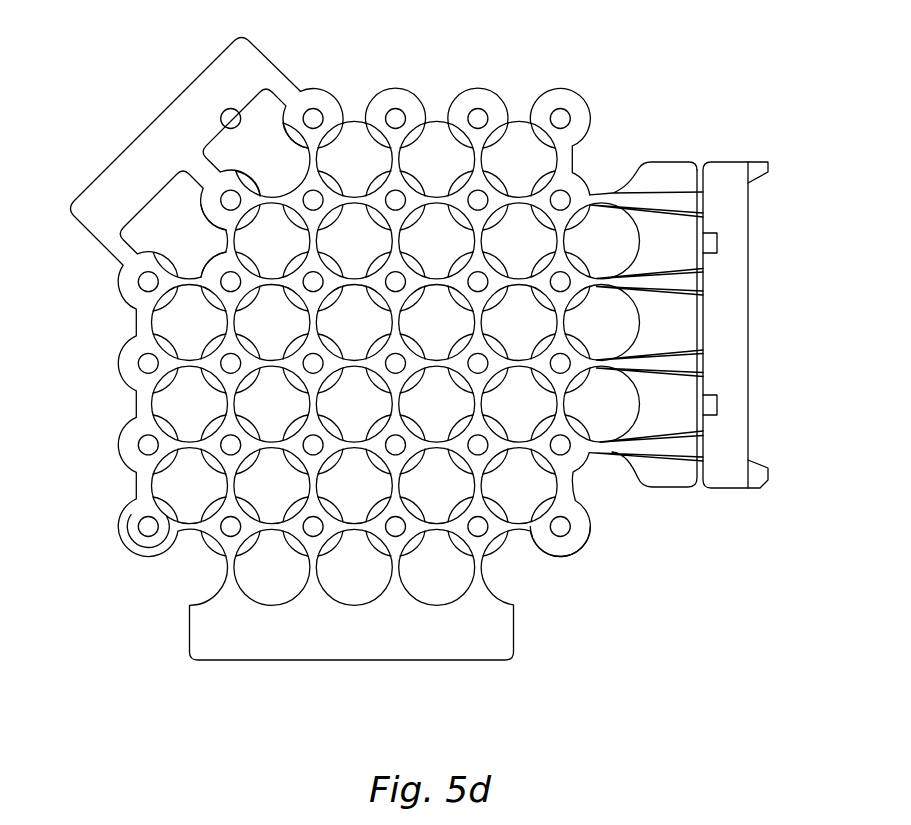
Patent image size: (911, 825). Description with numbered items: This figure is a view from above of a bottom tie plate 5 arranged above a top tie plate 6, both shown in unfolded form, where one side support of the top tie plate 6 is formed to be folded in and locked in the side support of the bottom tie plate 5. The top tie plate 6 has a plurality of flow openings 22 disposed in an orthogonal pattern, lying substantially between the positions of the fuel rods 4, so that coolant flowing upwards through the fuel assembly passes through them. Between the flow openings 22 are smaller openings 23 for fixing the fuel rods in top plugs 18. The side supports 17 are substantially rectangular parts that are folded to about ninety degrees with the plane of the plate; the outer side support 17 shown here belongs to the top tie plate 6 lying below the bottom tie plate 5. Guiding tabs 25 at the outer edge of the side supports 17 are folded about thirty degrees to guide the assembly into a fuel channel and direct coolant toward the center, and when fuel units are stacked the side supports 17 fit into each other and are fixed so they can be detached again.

The fuel rod 4 is at (581, 466).
The bottom tie plate 5 is at (692, 492).
The top tie plate 6 is at (752, 458).
The side support 17 is at (180, 108).
The top plug 18 is at (140, 528).
The flow opening 22 is at (182, 488).
The smaller opening 23 is at (150, 536).
The guiding tab 25 is at (718, 404).